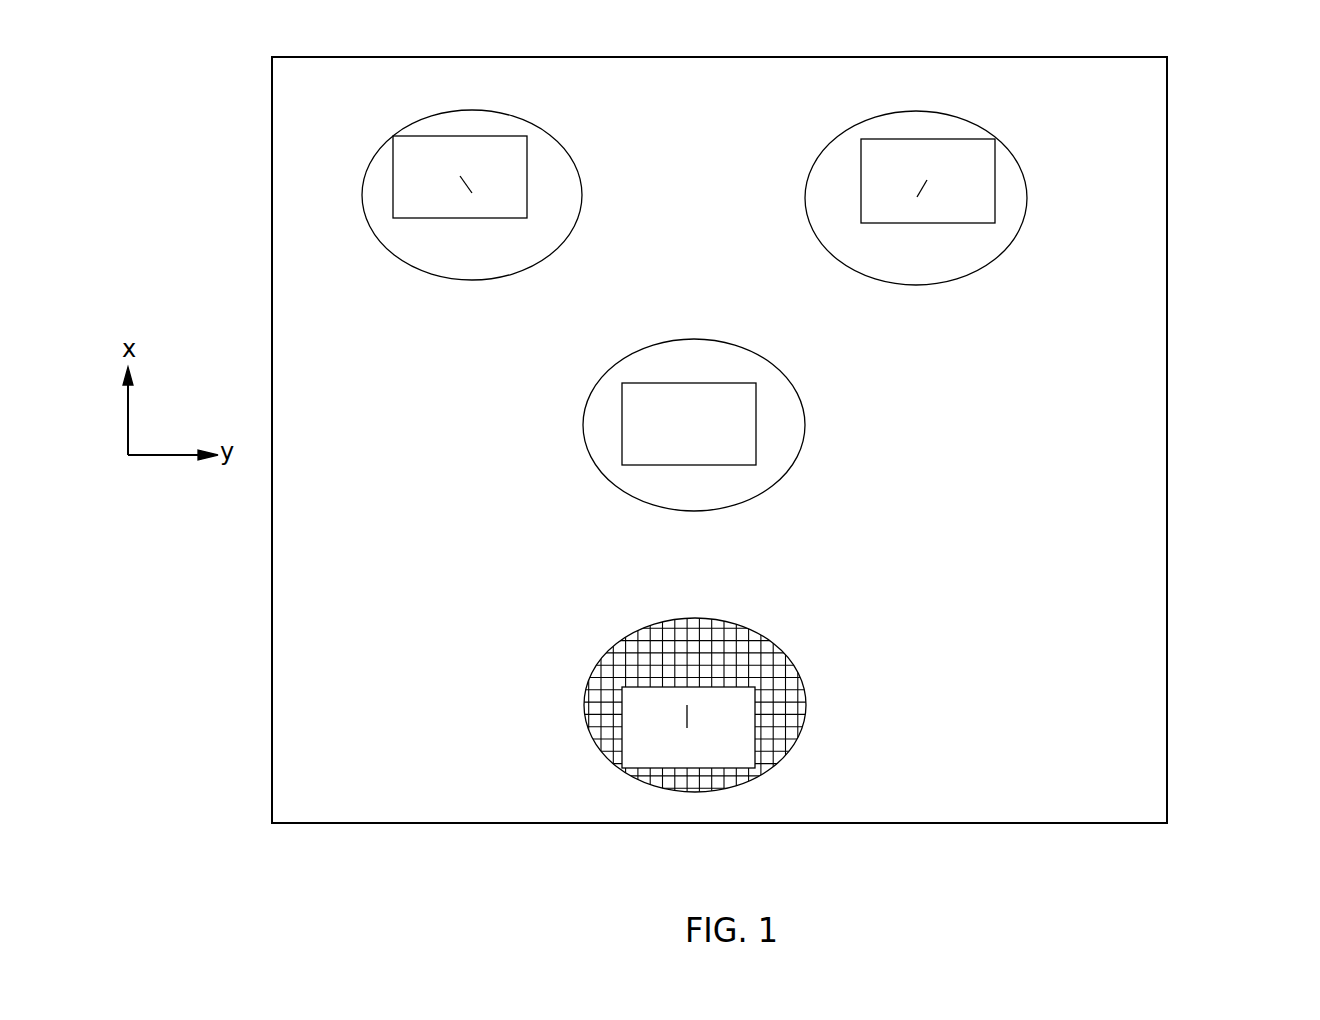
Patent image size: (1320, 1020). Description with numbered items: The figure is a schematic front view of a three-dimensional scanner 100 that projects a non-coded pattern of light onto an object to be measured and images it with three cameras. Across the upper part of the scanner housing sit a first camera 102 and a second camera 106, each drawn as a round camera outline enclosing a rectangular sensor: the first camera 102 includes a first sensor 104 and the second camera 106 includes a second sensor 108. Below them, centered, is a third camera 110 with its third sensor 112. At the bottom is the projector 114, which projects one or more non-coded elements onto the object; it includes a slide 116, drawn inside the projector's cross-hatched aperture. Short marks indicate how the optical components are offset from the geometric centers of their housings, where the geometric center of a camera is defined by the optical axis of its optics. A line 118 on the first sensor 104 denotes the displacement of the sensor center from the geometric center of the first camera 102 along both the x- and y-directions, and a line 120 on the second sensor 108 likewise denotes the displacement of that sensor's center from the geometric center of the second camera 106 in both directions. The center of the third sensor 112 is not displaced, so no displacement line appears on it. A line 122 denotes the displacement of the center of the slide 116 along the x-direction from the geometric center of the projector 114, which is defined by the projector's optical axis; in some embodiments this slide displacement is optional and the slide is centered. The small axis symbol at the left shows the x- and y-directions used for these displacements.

The 3D scanner 100 is at (1167, 175).
The first camera 102 is at (508, 112).
The first sensor 104 is at (527, 166).
The second camera 106 is at (878, 118).
The second sensor 108 is at (861, 170).
The third camera 110 is at (725, 343).
The third sensor 112 is at (756, 394).
The projector 114 is at (727, 622).
The slide 116 is at (747, 754).
The line 118 is at (460, 187).
The line 120 is at (925, 193).
The line 122 is at (687, 721).